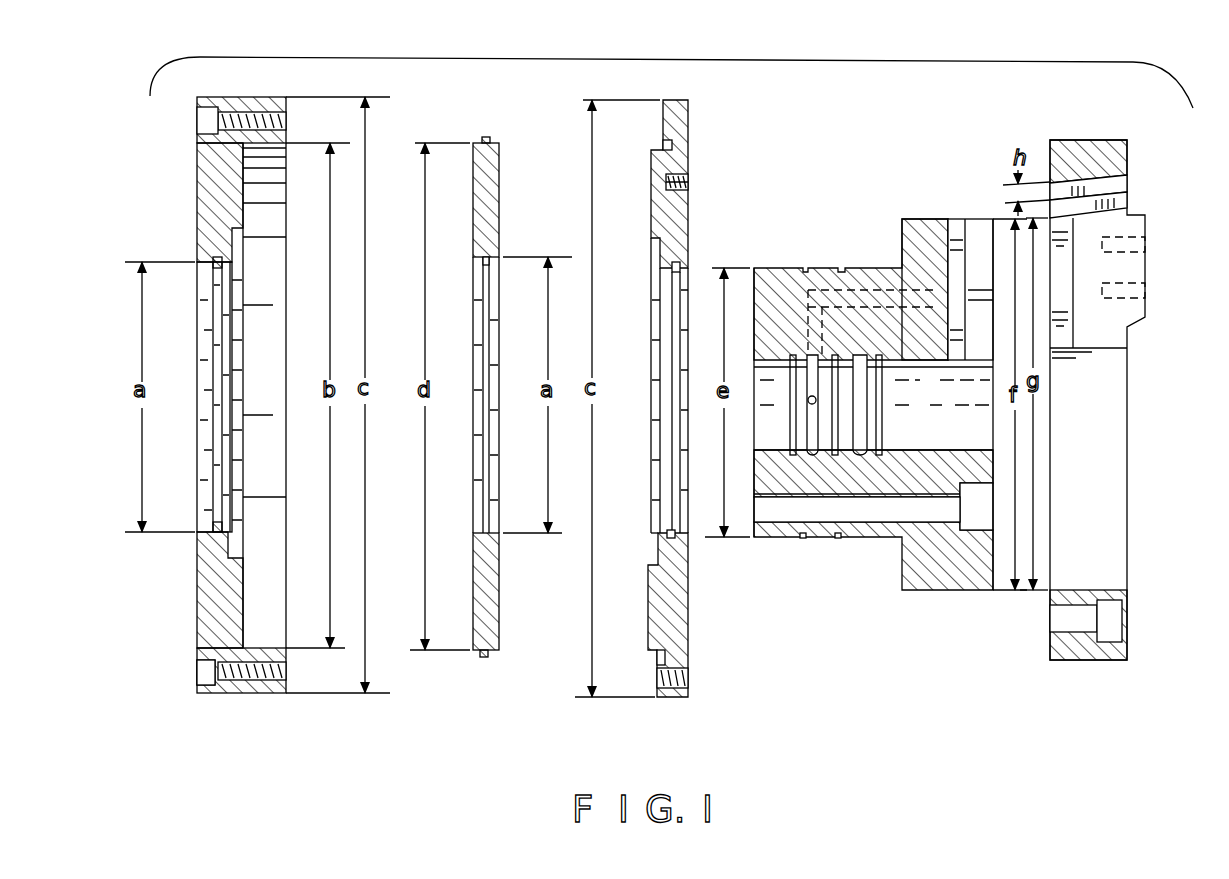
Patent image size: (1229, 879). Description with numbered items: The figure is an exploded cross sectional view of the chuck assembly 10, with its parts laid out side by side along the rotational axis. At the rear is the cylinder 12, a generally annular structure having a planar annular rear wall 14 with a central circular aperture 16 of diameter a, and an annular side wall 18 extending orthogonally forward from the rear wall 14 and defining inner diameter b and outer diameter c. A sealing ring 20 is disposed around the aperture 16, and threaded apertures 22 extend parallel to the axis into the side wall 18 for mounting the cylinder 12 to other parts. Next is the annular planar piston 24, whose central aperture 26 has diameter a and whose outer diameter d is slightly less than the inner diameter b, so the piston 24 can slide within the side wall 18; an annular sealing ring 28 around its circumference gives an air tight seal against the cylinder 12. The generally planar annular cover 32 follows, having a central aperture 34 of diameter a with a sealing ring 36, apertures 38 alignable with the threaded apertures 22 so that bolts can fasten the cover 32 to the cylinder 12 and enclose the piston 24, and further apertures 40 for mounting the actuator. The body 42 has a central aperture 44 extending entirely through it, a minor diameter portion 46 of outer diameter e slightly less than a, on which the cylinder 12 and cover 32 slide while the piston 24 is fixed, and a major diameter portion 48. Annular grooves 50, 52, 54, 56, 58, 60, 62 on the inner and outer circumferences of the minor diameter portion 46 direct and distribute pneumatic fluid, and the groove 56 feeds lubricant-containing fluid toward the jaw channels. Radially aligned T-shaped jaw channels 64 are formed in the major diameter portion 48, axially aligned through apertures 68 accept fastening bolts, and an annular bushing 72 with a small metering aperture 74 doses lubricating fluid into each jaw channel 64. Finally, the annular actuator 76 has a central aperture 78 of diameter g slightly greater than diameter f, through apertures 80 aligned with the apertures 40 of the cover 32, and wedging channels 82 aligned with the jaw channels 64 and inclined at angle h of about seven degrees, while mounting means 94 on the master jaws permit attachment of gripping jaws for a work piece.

The chuck assembly 10 is at (832, 50).
The cylinder 12 is at (207, 394).
The rear wall 14 is at (197, 608).
The central circular aperture 16 is at (213, 266).
The annular side wall 18 is at (254, 97).
The sealing ring 20 is at (216, 522).
The threaded apertures 22 is at (200, 120).
The piston 24 is at (458, 415).
The central aperture 26 is at (484, 263).
The sealing ring 28 is at (482, 656).
The cover 32 is at (675, 398).
The central aperture 34 is at (672, 270).
The sealing ring 36 is at (668, 533).
The apertures 38 is at (657, 676).
The apertures 40 is at (690, 178).
The body 42 is at (890, 396).
The central aperture 44 is at (770, 363).
The minor diameter portion 46 is at (852, 266).
The major diameter portion 48 is at (927, 219).
The annular groove 50 is at (882, 405).
The annular groove 52 is at (860, 372).
The annular groove 54 is at (838, 428).
The annular groove 56 is at (810, 422).
The annular groove 58 is at (794, 366).
The annular groove 60 is at (802, 538).
The annular groove 62 is at (838, 538).
The jaw channels 64 is at (976, 230).
The through apertures 68 is at (886, 508).
The annular bushing 72 is at (902, 262).
The central aperture 74 is at (938, 300).
The actuator 76 is at (1099, 388).
The central aperture 78 is at (1125, 181).
The through apertures 80 is at (1060, 632).
The wedging channels 82 is at (1125, 192).
The mounting means 94 is at (1142, 285).